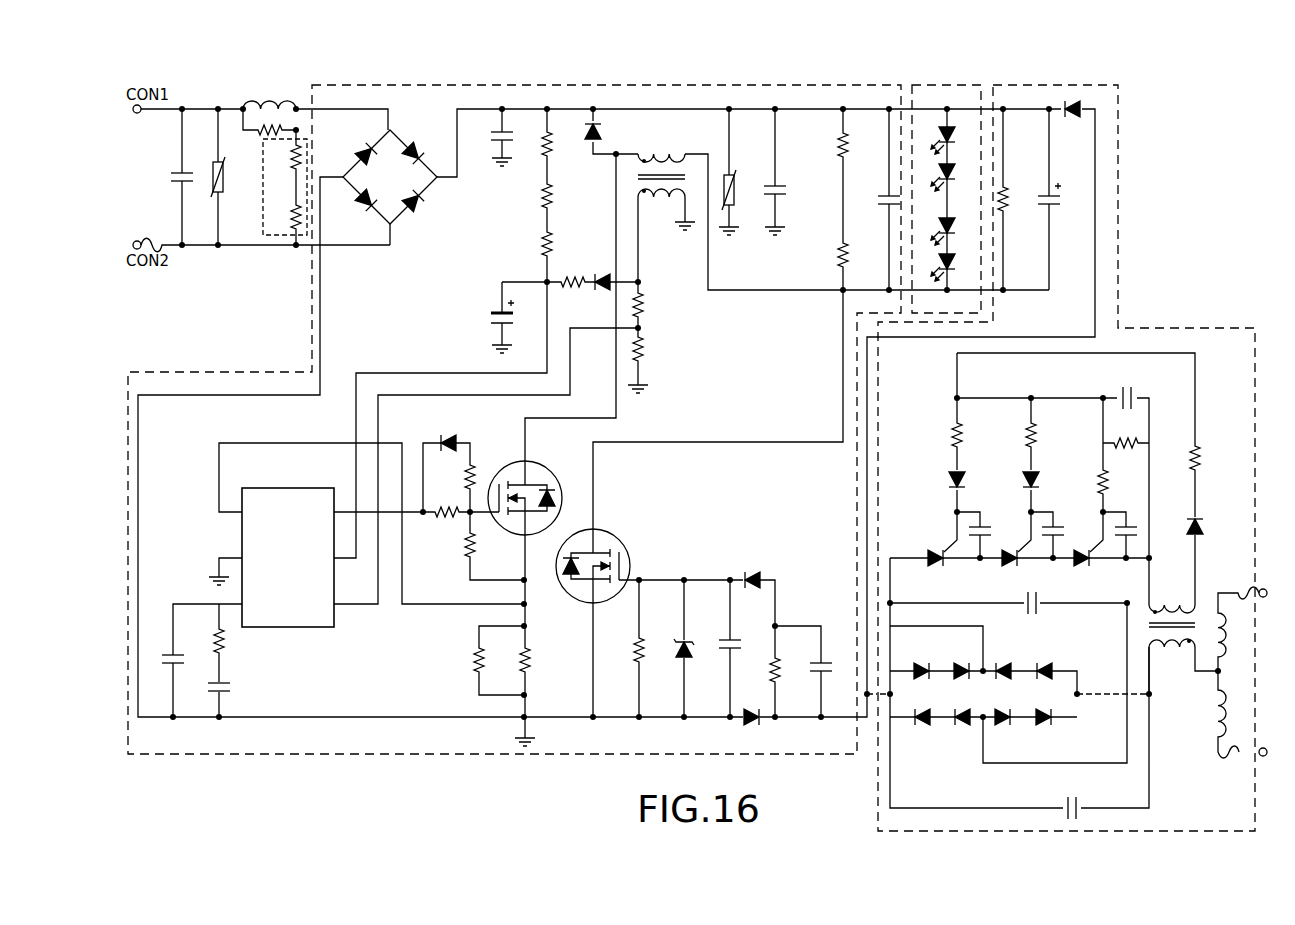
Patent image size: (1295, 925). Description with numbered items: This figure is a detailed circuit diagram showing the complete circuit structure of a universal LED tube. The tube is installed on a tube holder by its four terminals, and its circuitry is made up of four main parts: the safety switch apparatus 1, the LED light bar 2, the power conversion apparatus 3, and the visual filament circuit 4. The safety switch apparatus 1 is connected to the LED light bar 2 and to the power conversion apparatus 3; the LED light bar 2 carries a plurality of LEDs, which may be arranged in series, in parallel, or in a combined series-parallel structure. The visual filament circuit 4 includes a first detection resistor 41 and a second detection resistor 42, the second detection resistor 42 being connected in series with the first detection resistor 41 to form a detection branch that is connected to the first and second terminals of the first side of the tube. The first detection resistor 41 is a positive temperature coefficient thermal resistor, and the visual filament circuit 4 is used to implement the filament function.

The safety switch apparatus 1 is at (1188, 328).
The LED light bar 2 is at (960, 85).
The power conversion apparatus 3 is at (607, 88).
The visual filament circuit 4 is at (264, 228).
The first detection resistor 41 is at (297, 158).
The second detection resistor 42 is at (297, 222).